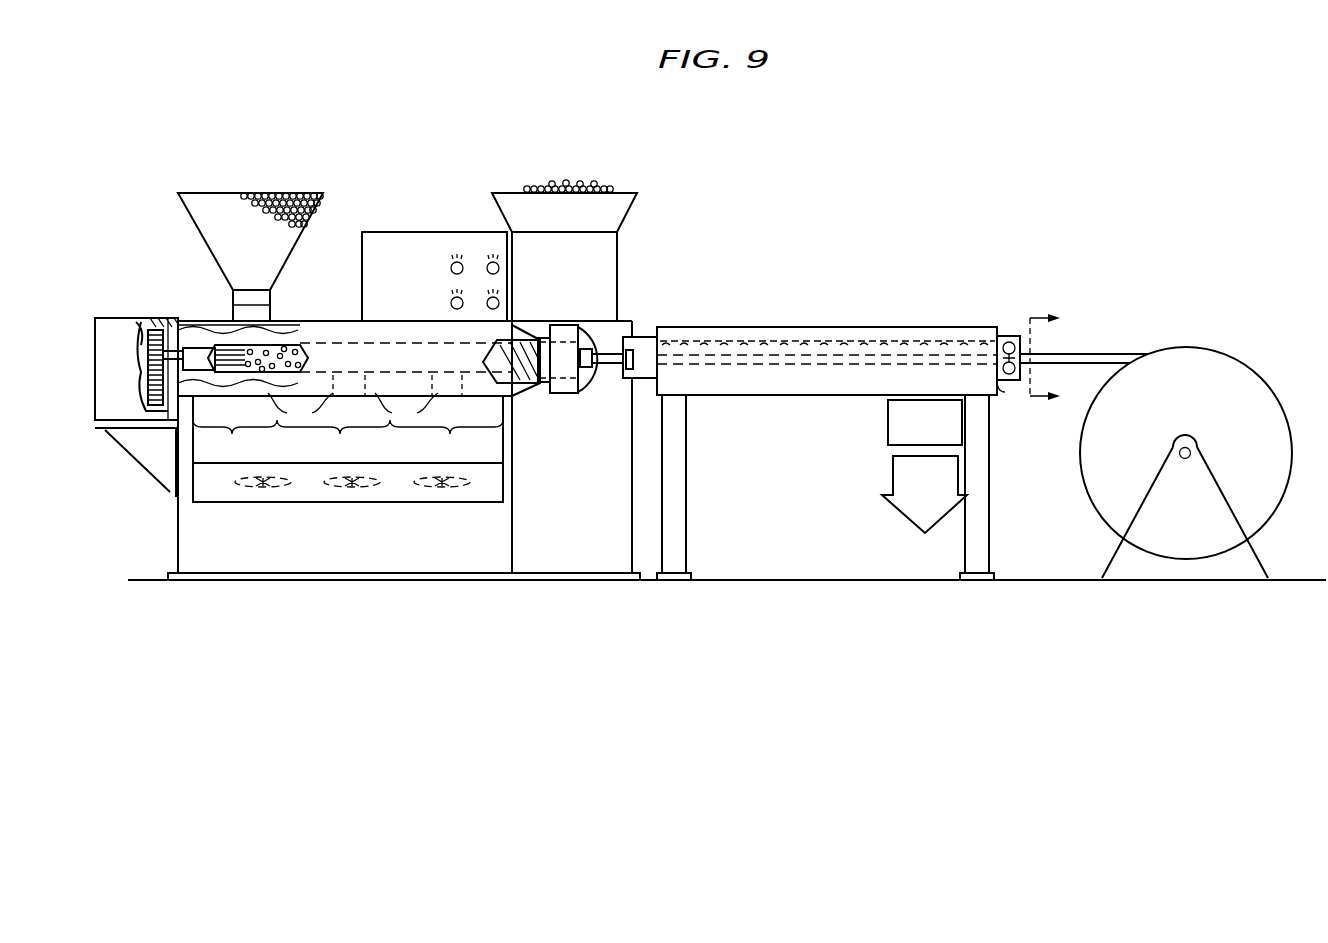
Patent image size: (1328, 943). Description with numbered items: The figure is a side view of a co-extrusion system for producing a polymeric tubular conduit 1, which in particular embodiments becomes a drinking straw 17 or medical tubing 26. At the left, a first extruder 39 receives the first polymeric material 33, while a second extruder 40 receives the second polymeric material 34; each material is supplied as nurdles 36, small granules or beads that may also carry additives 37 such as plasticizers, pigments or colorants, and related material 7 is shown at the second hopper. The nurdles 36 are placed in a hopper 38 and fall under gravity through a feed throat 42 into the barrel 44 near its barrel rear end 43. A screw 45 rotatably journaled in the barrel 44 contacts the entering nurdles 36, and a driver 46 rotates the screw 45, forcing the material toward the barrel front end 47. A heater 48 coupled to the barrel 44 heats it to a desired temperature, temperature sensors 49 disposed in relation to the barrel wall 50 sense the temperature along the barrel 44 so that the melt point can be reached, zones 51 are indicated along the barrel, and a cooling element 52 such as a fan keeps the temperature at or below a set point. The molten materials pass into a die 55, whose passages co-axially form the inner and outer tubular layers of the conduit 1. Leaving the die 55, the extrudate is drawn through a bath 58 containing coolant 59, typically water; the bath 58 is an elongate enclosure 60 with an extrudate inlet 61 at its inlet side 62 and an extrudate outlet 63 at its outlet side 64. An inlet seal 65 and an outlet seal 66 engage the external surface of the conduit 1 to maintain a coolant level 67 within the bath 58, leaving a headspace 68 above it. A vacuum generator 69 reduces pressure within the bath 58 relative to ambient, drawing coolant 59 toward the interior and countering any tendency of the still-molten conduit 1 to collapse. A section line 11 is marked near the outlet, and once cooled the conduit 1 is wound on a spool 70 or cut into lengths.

The polymeric tubular conduit 1 is at (881, 222).
The granulate material 7 is at (562, 150).
The section line 11 is at (1055, 358).
The drinking straw 17 is at (881, 222).
The medical tubing 26 is at (905, 106).
The first polymeric material 33 is at (272, 190).
The second polymeric material 34 is at (573, 188).
The nurdles 36 is at (418, 167).
The additives 37 is at (418, 167).
The hopper 38 is at (210, 233).
The first extruder 39 is at (98, 298).
The second extruder 40 is at (642, 232).
The feed throat 42 is at (265, 306).
The barrel rear end 43 is at (196, 345).
The barrel 44 is at (228, 372).
The screw 45 is at (283, 360).
The driver 46 is at (150, 352).
The barrel front end 47 is at (560, 345).
The heater 48 is at (480, 447).
The temperature sensors 49 is at (353, 407).
The barrel wall 50 is at (172, 478).
The temperature zones 51 is at (348, 440).
The cooling element 52 is at (408, 522).
The die 55 is at (587, 378).
The bath 58 is at (827, 323).
The coolant 59 is at (810, 382).
The elongate enclosure 60 is at (827, 323).
The extrudate inlet 61 is at (647, 318).
The inlet side 62 is at (652, 388).
The extrudate outlet 63 is at (1014, 324).
The outlet side 64 is at (1000, 390).
The inlet seal 65 is at (652, 356).
The outlet seal 66 is at (998, 355).
The coolant level 67 is at (898, 345).
The headspace 68 is at (861, 338).
The vacuum generator 69 is at (924, 466).
The spool 70 is at (1258, 400).